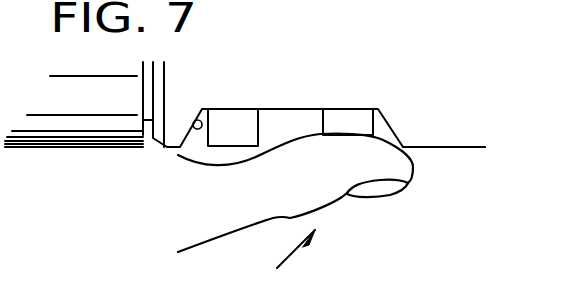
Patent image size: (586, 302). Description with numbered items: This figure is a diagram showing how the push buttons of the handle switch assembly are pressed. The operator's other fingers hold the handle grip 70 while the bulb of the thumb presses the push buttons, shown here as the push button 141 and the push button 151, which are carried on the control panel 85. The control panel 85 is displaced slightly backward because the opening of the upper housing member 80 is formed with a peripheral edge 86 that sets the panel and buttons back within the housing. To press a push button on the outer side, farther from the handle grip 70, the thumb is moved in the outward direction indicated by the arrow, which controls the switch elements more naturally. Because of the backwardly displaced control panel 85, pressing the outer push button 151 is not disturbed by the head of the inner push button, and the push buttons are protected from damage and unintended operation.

The handle grip 70 is at (65, 149).
The upper housing member 80 is at (468, 140).
The control panel 85 is at (295, 112).
The peripheral edge 86 is at (197, 120).
The switch push button 141 is at (242, 128).
The switch push button 151 is at (353, 122).